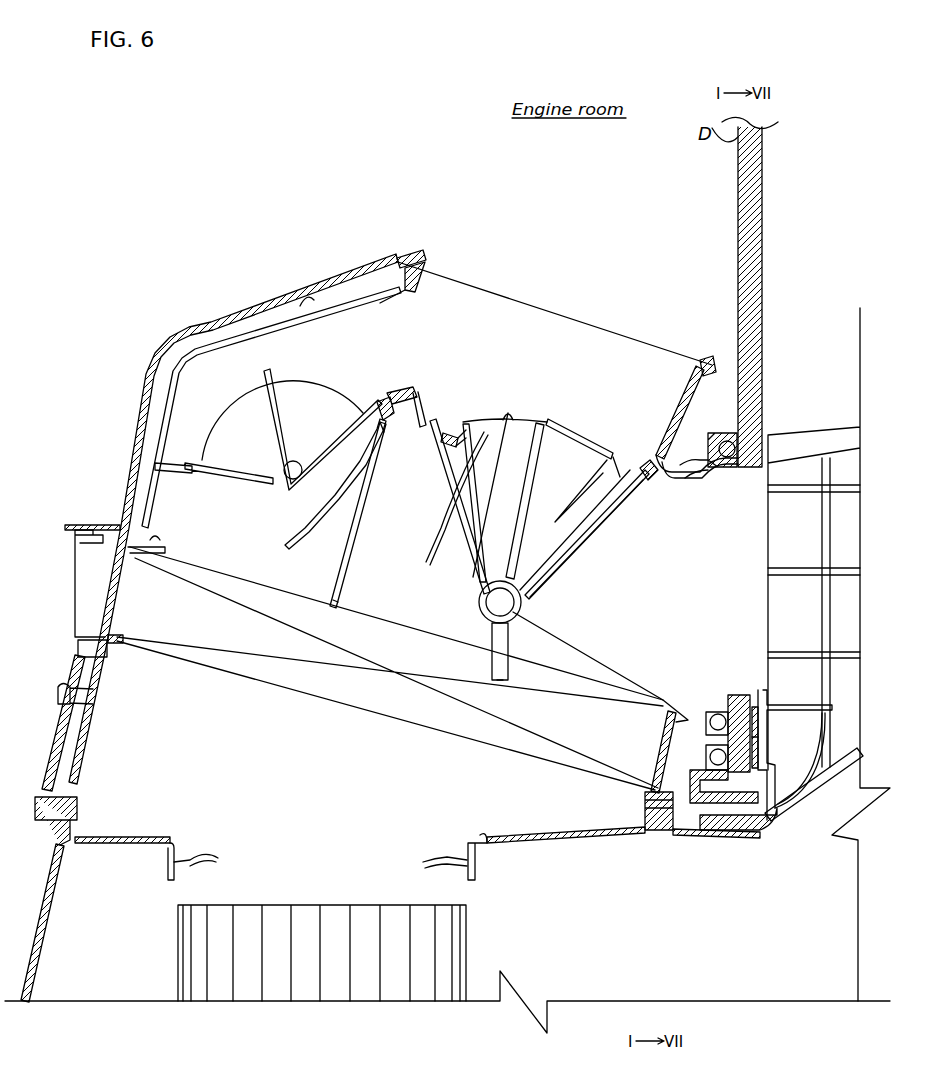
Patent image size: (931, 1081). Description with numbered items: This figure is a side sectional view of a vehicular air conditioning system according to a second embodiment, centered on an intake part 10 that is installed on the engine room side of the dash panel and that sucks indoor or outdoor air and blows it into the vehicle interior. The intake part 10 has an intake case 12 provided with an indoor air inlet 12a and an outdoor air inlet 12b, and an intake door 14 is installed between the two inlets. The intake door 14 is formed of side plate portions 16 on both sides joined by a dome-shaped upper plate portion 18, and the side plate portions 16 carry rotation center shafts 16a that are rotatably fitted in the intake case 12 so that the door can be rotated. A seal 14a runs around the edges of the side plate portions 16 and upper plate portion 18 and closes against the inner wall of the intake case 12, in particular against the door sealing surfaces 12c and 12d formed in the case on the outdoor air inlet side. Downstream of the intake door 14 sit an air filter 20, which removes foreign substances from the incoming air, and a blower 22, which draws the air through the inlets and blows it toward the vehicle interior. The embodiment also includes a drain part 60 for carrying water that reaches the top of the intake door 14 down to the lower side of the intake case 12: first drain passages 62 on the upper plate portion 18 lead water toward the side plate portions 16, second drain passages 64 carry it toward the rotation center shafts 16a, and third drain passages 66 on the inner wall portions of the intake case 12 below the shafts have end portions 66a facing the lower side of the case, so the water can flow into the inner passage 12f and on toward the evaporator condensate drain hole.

The intake part 10 is at (255, 303).
The intake case 12 is at (150, 413).
The indoor air inlet 12a is at (748, 520).
The outdoor air inlet 12b is at (425, 278).
The door sealing surface 12c is at (440, 470).
The door sealing surface 12d is at (600, 700).
The inner passage 12f is at (600, 873).
The intake door 14 is at (547, 403).
The seal 14a is at (446, 420).
The side plate portions 16 is at (490, 433).
The rotation center shafts 16a is at (505, 602).
The upper plate portion 18 is at (562, 432).
The air filter 20 is at (113, 520).
The blower 22 is at (178, 977).
The drain part 60 is at (442, 778).
The first drain passages 62 is at (652, 396).
The second drain passages 64 is at (463, 600).
The third drain passages 66 is at (497, 625).
The end portions 66a is at (500, 678).